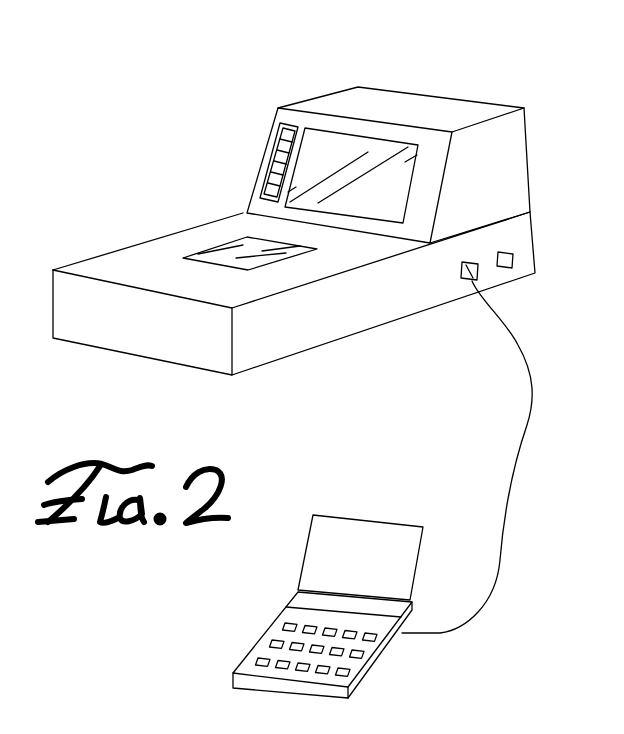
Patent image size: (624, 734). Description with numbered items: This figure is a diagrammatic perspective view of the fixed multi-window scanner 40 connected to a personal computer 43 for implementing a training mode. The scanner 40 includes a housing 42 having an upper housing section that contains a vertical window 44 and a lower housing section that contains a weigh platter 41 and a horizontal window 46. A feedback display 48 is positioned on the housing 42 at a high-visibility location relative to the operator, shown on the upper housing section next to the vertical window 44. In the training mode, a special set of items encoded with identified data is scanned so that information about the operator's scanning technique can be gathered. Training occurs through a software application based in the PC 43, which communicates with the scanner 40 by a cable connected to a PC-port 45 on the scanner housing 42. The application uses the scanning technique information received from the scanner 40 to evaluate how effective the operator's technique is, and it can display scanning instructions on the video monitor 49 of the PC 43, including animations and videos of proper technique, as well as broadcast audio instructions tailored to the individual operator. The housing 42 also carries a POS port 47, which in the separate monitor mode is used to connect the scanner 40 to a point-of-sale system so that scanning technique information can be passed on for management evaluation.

The multi-window scanner 40 is at (156, 180).
The weigh platter 41 is at (348, 258).
The housing 42 is at (134, 246).
The personal computer 43 is at (263, 633).
The vertical window 44 is at (330, 148).
The PC-port 45 is at (467, 283).
The horizontal window 46 is at (280, 260).
The POS port 47 is at (514, 260).
The feedback display 48 is at (268, 151).
The video monitor 49 is at (352, 562).